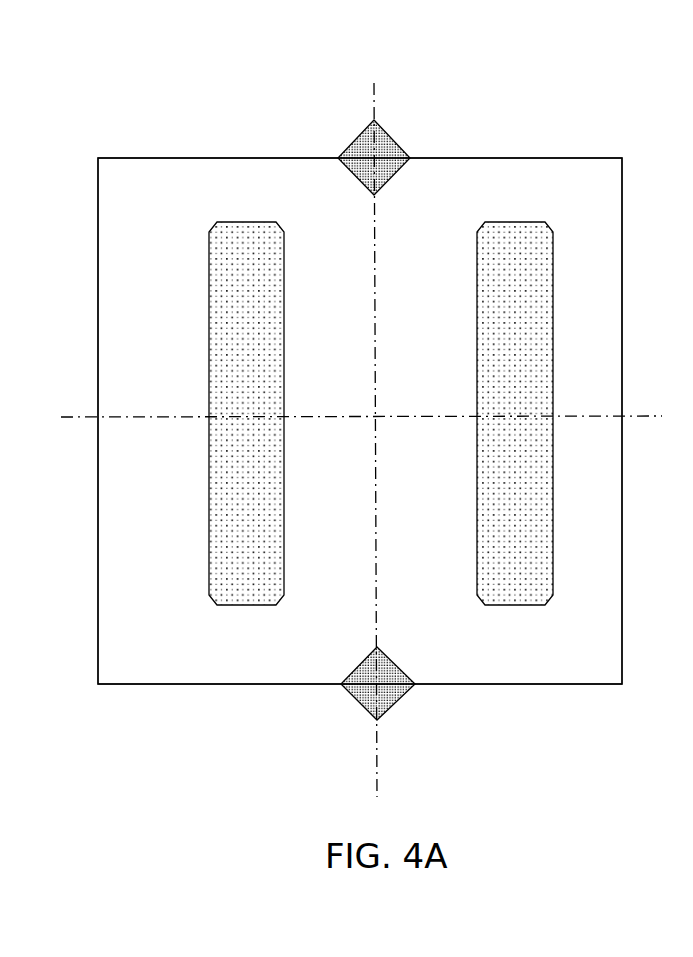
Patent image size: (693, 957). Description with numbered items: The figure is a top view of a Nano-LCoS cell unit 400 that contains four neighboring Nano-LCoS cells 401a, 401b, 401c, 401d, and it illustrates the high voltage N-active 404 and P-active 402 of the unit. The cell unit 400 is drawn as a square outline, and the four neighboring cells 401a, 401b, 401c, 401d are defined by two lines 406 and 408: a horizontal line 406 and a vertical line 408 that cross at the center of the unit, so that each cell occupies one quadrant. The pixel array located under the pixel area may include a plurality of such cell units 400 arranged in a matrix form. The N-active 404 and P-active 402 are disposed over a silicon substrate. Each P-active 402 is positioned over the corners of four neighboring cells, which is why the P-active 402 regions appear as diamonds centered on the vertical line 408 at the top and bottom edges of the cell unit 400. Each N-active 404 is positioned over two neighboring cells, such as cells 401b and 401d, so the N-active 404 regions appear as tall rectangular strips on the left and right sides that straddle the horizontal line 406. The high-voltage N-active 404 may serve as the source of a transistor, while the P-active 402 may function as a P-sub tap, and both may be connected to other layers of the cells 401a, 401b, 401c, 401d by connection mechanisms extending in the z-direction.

The Nano-LCoS cell unit 400 is at (434, 157).
The Nano-LCoS cell 401a is at (186, 157).
The Nano-LCoS cell 401b is at (586, 157).
The Nano-LCoS cell 401c is at (187, 685).
The Nano-LCoS cell 401d is at (569, 685).
The P-active 402 is at (315, 720).
The N-active 404 is at (209, 250).
The line 406 is at (640, 414).
The line 408 is at (377, 742).